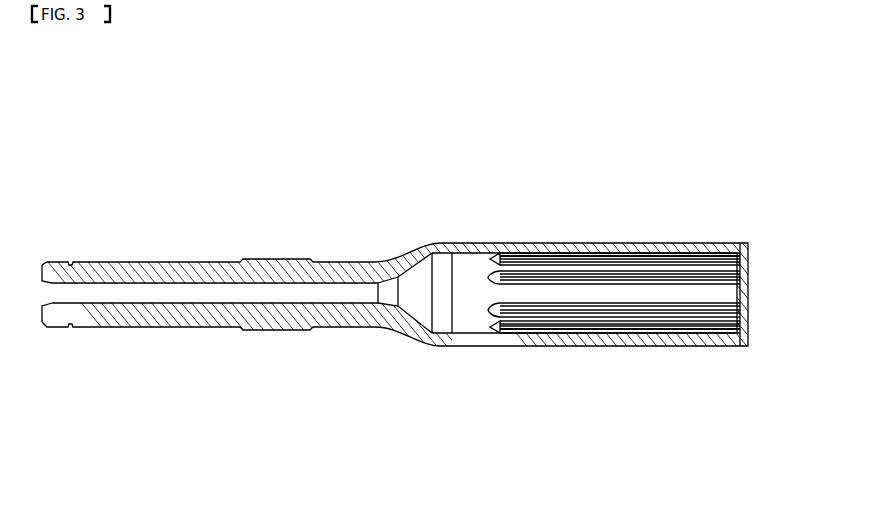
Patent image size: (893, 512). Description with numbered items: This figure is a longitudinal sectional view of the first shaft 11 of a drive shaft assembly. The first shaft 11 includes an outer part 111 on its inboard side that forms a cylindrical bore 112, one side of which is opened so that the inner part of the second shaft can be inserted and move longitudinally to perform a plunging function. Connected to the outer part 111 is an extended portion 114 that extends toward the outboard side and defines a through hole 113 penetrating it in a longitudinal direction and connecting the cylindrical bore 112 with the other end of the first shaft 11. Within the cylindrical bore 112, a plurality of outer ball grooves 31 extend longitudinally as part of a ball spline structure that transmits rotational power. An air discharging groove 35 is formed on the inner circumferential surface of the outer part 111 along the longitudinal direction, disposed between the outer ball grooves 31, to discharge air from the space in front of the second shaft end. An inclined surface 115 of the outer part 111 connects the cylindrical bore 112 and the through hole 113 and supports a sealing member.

The first shaft 11 is at (352, 232).
The outer part 111 is at (549, 243).
The cylindrical bore 112 is at (463, 293).
The through hole 113 is at (278, 295).
The extended portion 114 is at (102, 262).
The inclined surface 115 is at (415, 270).
The outer ball grooves 31 is at (616, 312).
The air discharging groove 35 is at (657, 252).